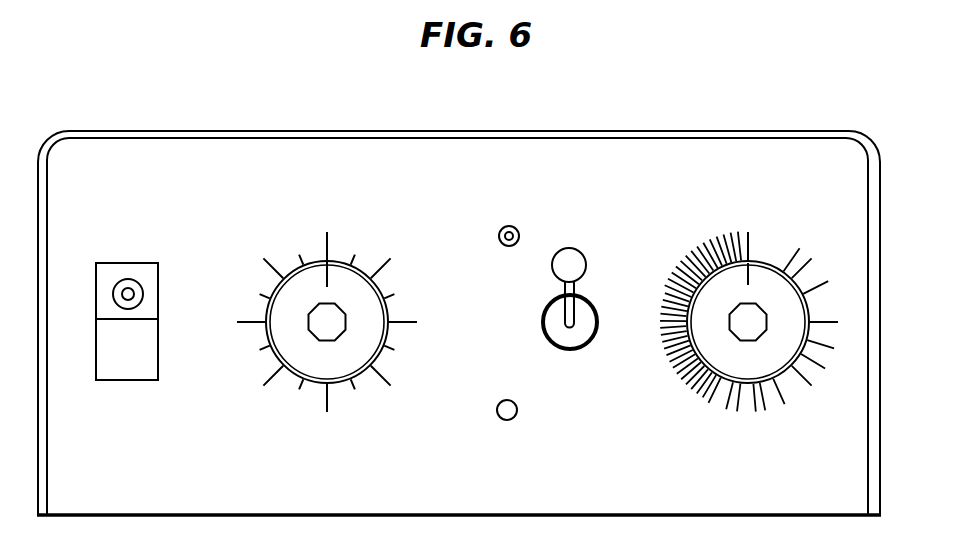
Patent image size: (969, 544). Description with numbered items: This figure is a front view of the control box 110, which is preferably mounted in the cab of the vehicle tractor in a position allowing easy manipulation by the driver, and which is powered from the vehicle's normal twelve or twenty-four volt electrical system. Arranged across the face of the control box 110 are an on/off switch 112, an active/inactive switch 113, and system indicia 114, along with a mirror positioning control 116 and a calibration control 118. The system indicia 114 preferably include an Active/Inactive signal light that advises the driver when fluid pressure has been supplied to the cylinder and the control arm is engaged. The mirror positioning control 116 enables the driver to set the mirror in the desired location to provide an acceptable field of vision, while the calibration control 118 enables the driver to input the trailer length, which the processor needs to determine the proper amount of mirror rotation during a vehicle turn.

The control box 110 is at (417, 168).
The on/off switch 112 is at (160, 279).
The active/inactive switch 113 is at (542, 326).
The system indicia 114 is at (499, 236).
The mirror positioning control 116 is at (302, 288).
The calibration control 118 is at (720, 295).